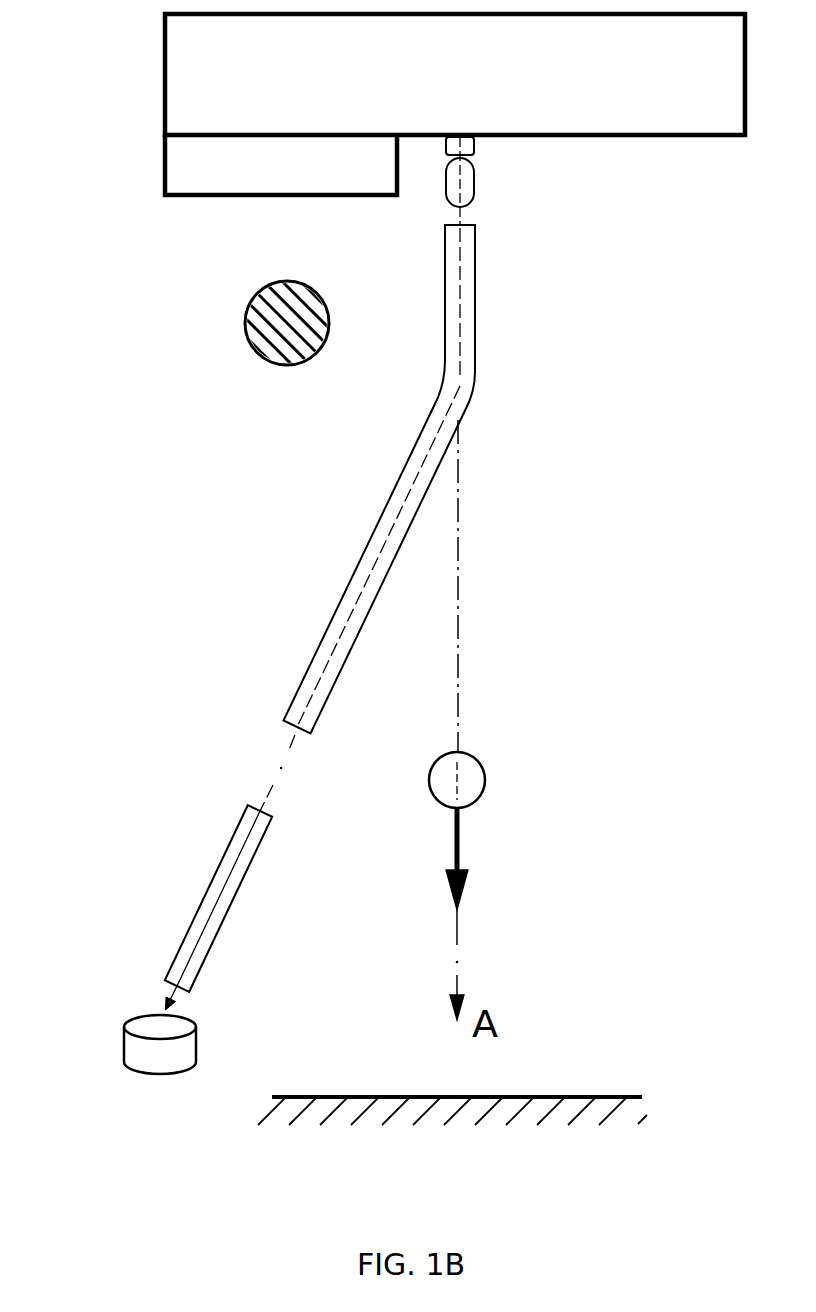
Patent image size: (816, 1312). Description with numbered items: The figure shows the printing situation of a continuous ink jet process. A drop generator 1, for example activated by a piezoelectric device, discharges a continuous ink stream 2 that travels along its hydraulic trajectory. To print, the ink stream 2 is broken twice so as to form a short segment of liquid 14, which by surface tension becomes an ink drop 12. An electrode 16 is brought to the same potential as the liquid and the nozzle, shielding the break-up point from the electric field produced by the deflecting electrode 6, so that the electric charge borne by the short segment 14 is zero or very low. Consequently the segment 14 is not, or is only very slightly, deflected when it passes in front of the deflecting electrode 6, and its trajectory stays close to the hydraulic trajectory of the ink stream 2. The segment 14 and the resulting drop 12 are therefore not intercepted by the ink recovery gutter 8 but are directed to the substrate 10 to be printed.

The drop generator 1 is at (193, 90).
The electrode 16 is at (193, 174).
The segment of liquid 14 is at (470, 193).
The ink stream 2 is at (357, 582).
The electrode 6 is at (270, 325).
The ink drop 12 is at (472, 770).
The ink recovery gutter 8 is at (140, 1062).
The substrate 10 is at (590, 1097).